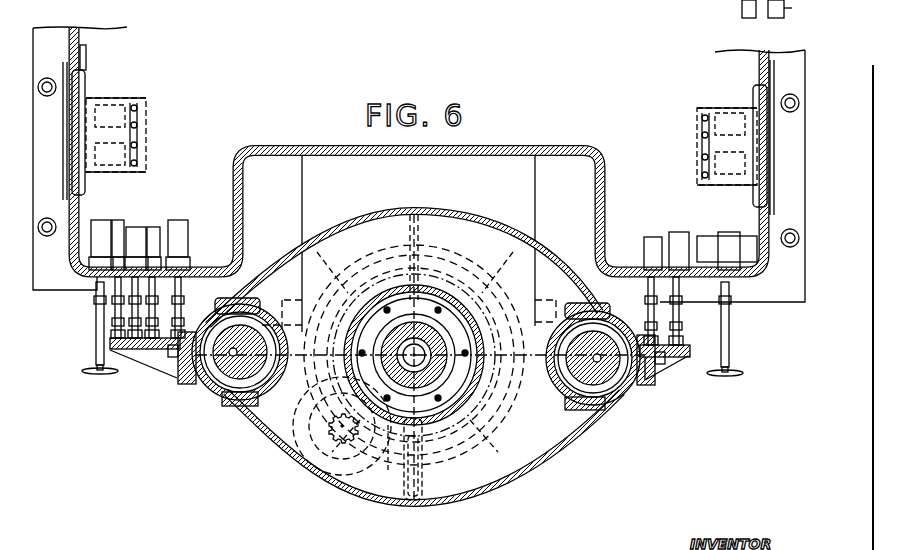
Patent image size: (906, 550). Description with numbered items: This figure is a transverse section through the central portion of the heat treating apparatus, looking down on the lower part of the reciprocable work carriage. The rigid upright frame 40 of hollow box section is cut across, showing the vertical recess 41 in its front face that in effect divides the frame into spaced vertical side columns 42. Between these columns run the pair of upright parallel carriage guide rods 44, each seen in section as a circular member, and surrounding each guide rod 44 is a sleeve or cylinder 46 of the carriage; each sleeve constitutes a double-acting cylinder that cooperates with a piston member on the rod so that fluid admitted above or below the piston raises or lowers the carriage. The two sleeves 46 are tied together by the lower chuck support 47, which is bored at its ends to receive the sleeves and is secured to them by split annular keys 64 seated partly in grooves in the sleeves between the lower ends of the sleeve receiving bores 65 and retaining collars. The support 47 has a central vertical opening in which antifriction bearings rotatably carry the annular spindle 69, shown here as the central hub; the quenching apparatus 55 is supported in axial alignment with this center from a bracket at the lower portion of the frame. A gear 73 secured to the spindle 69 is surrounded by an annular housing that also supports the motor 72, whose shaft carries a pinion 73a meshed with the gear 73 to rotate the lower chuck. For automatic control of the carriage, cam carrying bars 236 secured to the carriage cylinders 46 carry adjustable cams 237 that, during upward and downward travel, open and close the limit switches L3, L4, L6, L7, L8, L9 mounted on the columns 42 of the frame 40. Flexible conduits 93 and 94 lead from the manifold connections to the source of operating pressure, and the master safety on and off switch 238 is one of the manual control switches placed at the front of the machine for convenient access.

The rigid upright frame 40 is at (97, 28).
The vertical recess 41 is at (460, 157).
The vertical side columns 42 is at (205, 270).
The carriage guide rods 44 is at (218, 393).
The sleeves or cylinders 46 is at (240, 410).
The lower chuck support 47 is at (500, 482).
The quenching apparatus 55 is at (424, 345).
The split annular keys 64 is at (230, 312).
The sleeve receiving bores 65 is at (612, 330).
The annular spindle 69 is at (492, 408).
The motor 72 is at (312, 475).
The gear 73 is at (385, 505).
The pinion 73a is at (300, 455).
The flexible conduit 93 is at (740, 10).
The flexible conduit 94 is at (791, 9).
The cam carrying bars 236 is at (662, 382).
The adjustable cams 237 is at (110, 341).
The master safety on and off switch 238 is at (108, 216).
The limit switch L3 is at (682, 230).
The limit switch L4 is at (127, 214).
The limit switch L6 is at (188, 221).
The limit switch L7 is at (140, 227).
The limit switch L8 is at (157, 227).
The limit switch L9 is at (653, 237).